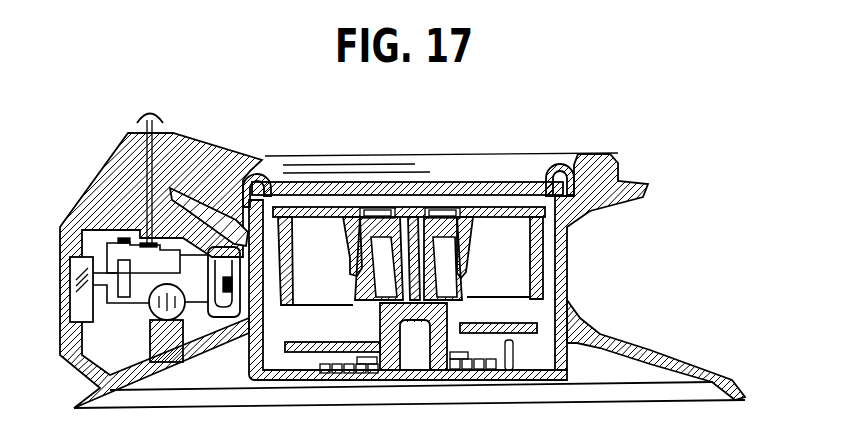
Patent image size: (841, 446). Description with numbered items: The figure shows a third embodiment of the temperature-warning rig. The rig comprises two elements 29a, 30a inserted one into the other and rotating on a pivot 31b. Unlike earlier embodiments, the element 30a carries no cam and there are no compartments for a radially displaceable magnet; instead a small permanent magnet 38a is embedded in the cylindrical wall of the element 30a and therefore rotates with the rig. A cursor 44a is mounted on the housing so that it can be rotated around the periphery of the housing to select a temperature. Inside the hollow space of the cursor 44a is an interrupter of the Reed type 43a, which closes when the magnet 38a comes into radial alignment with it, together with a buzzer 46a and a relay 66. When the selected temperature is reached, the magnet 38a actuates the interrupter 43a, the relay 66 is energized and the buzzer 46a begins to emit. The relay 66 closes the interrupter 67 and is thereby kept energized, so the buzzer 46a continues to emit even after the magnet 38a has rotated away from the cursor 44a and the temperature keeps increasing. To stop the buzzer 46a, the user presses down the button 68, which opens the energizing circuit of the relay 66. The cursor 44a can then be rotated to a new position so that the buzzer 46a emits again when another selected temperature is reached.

The cursor 44a is at (130, 167).
The interrupter 67 is at (128, 230).
The relay 66 is at (120, 272).
The button 68 is at (160, 119).
The interrupter of the Reed type 43a is at (262, 262).
The permanent magnet 38a is at (280, 292).
The pivot 31b is at (407, 270).
The element 30a is at (462, 270).
The element 29a is at (450, 290).
The buzzer 46a is at (84, 308).